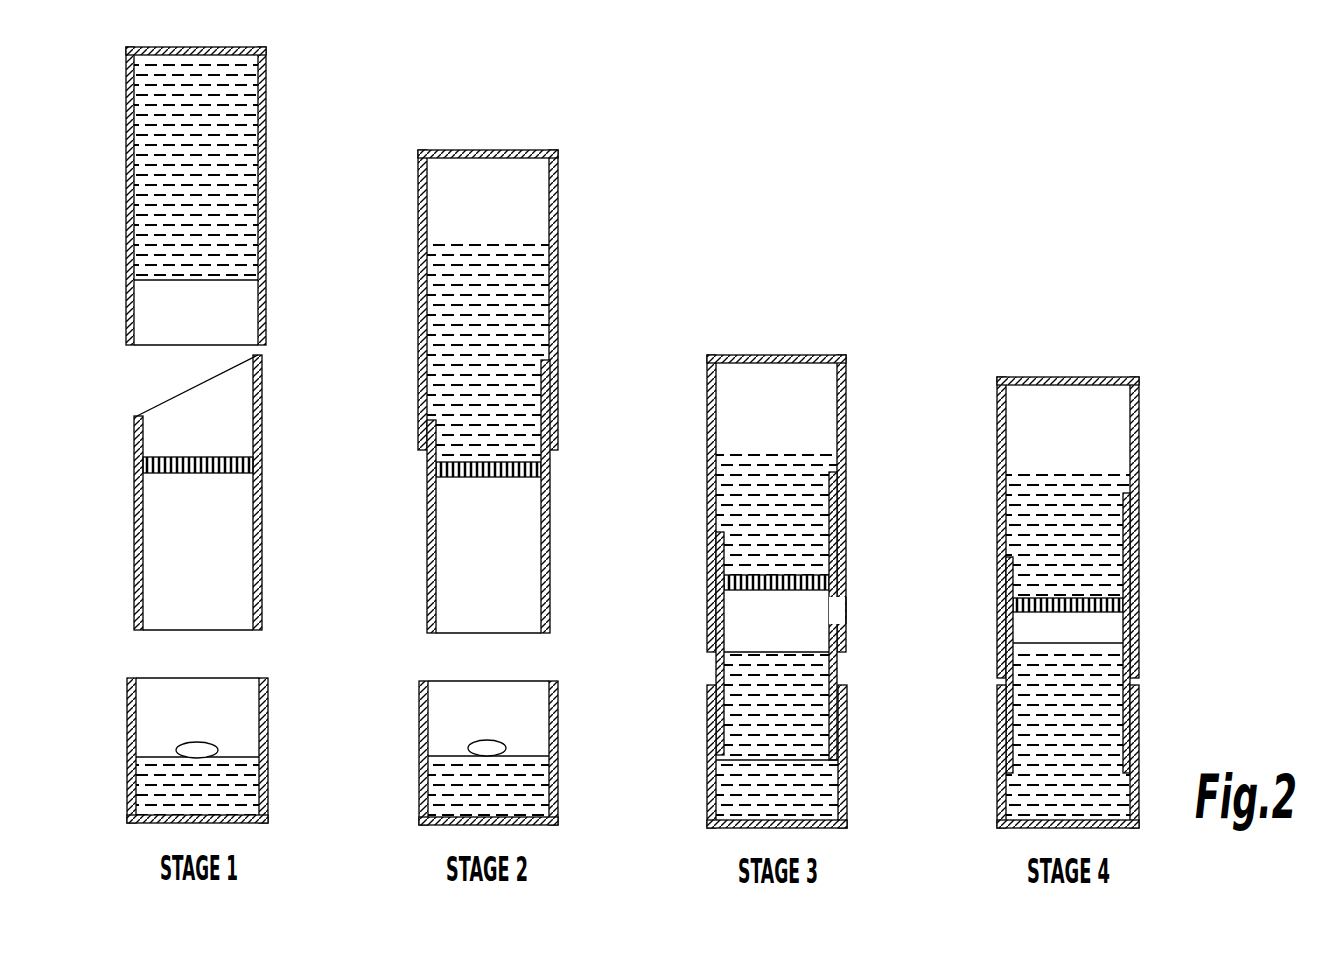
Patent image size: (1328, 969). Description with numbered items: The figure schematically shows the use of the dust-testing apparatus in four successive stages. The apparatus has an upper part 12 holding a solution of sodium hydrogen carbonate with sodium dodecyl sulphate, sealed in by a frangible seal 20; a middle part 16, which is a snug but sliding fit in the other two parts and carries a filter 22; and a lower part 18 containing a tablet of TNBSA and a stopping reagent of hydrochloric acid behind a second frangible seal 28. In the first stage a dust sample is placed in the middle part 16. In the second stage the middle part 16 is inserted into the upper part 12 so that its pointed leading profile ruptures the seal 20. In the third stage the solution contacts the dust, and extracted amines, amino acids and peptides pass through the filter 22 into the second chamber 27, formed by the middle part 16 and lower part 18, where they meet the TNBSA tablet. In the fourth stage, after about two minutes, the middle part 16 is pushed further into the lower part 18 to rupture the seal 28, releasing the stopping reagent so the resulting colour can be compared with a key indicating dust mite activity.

The upper part 12 is at (126, 196).
The frangible seal 20 is at (150, 283).
The filter 22 is at (150, 465).
The middle part 16 is at (134, 545).
The lower part 18 is at (127, 718).
The second chamber 27 is at (810, 713).
The frangible seal 28 is at (808, 762).